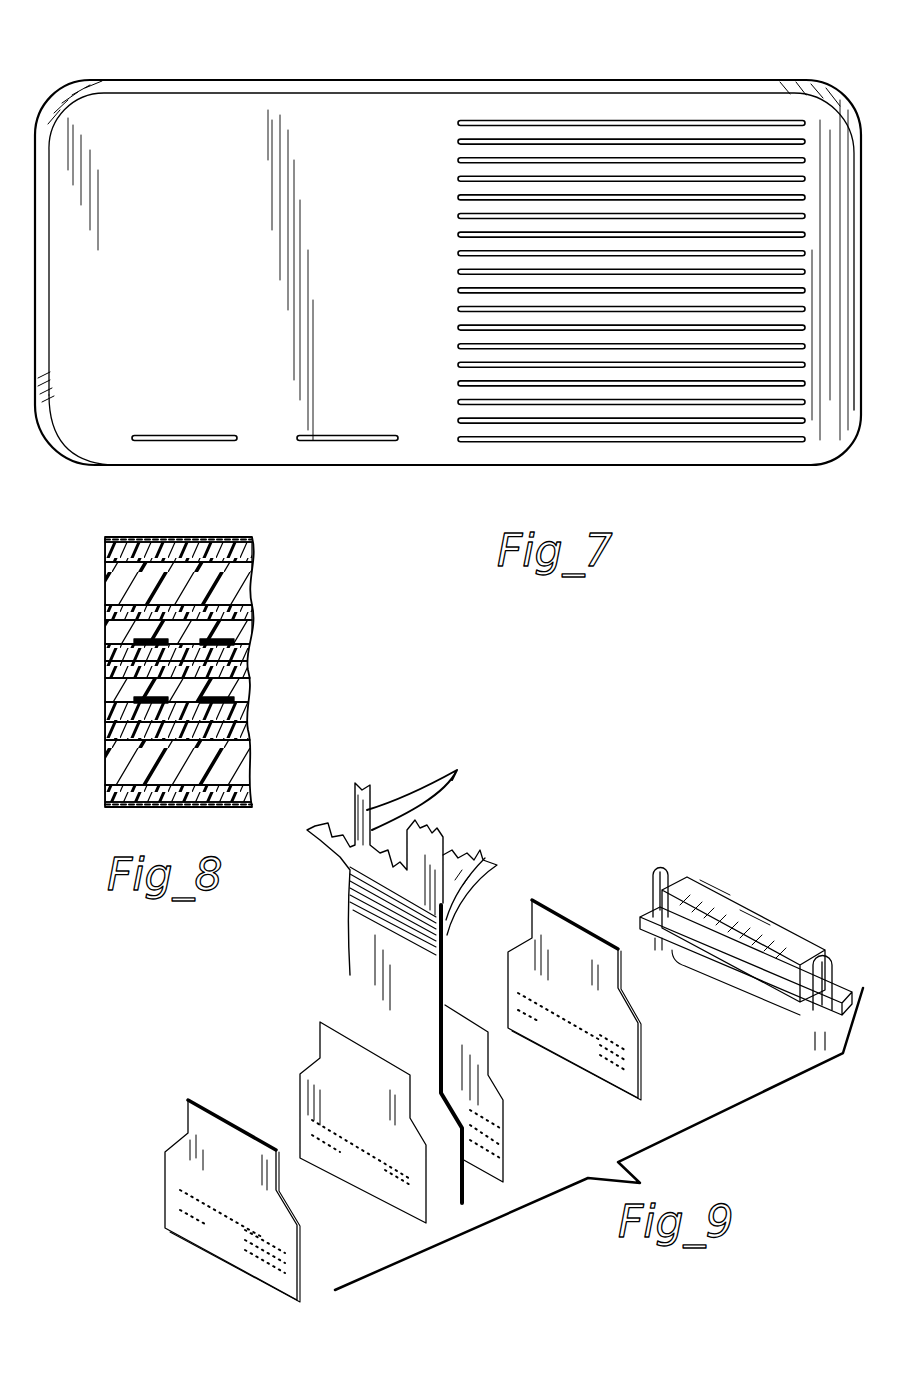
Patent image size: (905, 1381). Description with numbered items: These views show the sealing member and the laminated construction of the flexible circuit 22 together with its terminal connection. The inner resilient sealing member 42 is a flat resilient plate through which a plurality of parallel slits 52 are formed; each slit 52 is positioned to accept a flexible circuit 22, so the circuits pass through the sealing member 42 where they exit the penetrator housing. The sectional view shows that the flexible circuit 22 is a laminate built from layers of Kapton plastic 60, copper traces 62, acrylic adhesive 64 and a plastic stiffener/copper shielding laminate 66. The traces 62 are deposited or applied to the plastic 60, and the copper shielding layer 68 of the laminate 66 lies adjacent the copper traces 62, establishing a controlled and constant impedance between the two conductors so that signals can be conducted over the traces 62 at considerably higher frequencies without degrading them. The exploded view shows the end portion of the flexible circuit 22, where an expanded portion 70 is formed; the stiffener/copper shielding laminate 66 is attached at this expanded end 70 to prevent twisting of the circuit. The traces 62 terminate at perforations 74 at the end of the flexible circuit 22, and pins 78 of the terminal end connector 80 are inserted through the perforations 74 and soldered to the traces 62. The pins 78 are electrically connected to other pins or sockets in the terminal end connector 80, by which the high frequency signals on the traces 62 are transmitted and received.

In FIG. 9, the flexible circuit 22 is at (350, 973).
In FIG. 7, the inner resilient sealing member 42 is at (315, 127).
In FIG. 7, the slits 52 is at (777, 238).
In FIG. 8, the Kapton plastic layer 60 is at (108, 612).
In FIG. 9, the Kapton plastic layer 60 is at (347, 1048).
In FIG. 8, the copper traces 62 is at (240, 636).
In FIG. 9, the copper traces 62 is at (412, 785).
In FIG. 8, the acrylic adhesive 64 is at (104, 658).
In FIG. 8, the plastic stiffener/copper shielding laminate 66 is at (262, 523).
In FIG. 9, the plastic stiffener/copper shielding laminate 66 is at (205, 1130).
In FIG. 8, the copper shielding layer 68 is at (108, 537).
In FIG. 9, the expanded portions 70 is at (452, 1180).
In FIG. 9, the perforations 74 is at (612, 1042).
In FIG. 9, the pins 78 is at (752, 948).
In FIG. 9, the terminal end connector 80 is at (808, 1022).